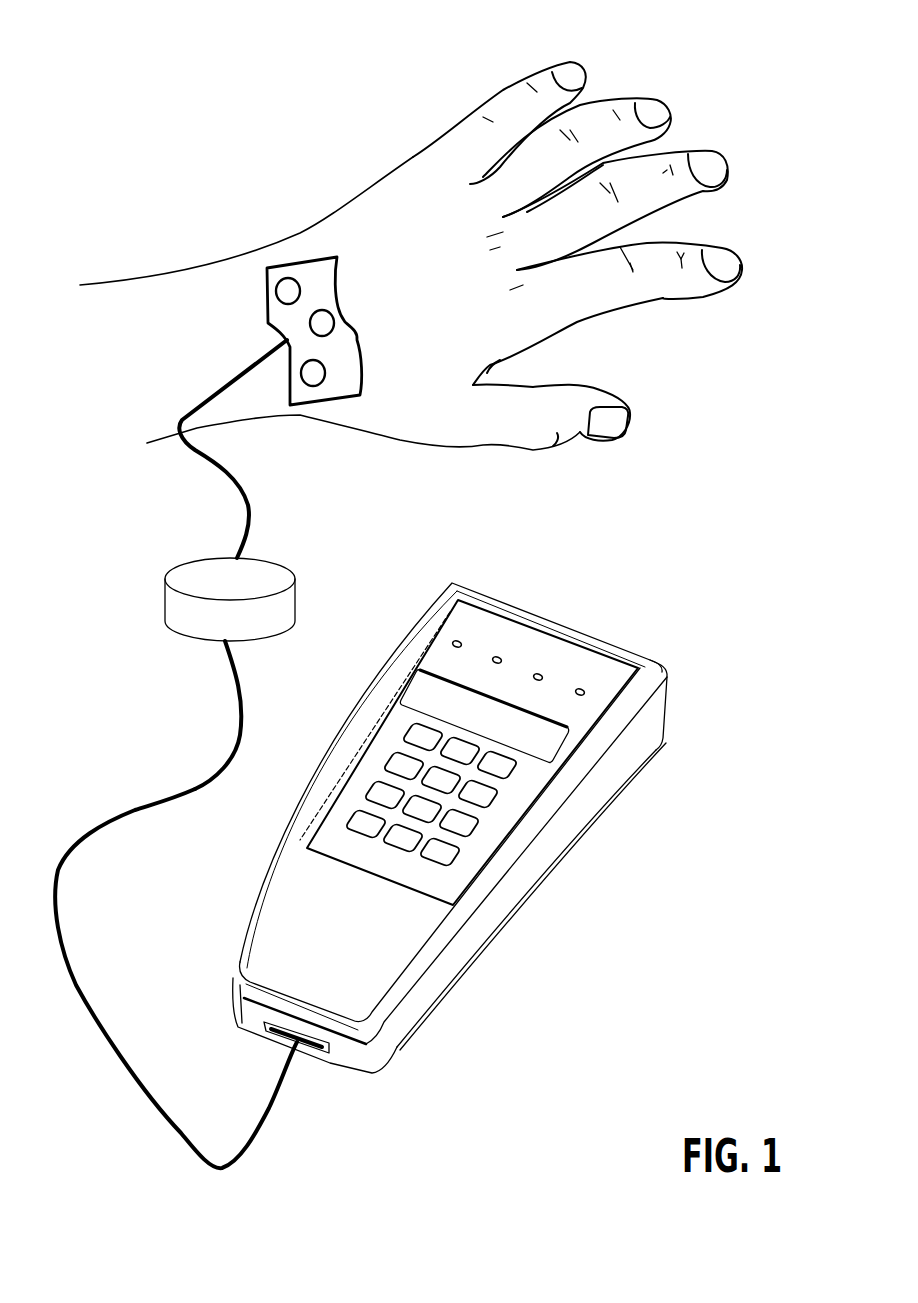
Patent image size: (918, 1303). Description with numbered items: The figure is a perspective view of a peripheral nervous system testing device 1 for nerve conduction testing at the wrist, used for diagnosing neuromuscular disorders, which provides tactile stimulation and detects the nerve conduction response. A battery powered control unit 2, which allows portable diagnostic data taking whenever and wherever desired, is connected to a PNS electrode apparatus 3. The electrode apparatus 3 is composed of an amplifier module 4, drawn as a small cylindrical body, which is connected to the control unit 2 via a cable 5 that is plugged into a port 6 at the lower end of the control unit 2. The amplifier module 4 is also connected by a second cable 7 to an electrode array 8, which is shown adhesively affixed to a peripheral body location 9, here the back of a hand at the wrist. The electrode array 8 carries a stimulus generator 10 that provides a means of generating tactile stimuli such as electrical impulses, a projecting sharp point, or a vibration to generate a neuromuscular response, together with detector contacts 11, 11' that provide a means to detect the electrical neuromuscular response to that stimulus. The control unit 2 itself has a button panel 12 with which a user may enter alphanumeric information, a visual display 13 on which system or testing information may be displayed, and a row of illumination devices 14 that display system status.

The peripheral nervous system testing device 1 is at (116, 52).
The control unit 2 is at (612, 642).
The PNS electrode apparatus 3 is at (108, 376).
The amplifier module 4 is at (177, 565).
The cable 5 is at (111, 815).
The port 6 is at (315, 1050).
The cable 7 is at (188, 410).
The electrode array 8 is at (303, 262).
The peripheral body location 9 is at (438, 147).
The stimulus generator 10 is at (322, 310).
The detector contact 11 is at (258, 256).
The detector contact 11' is at (249, 324).
The button panel 12 is at (470, 828).
The visual display 13 is at (557, 732).
The illumination devices 14 is at (498, 655).